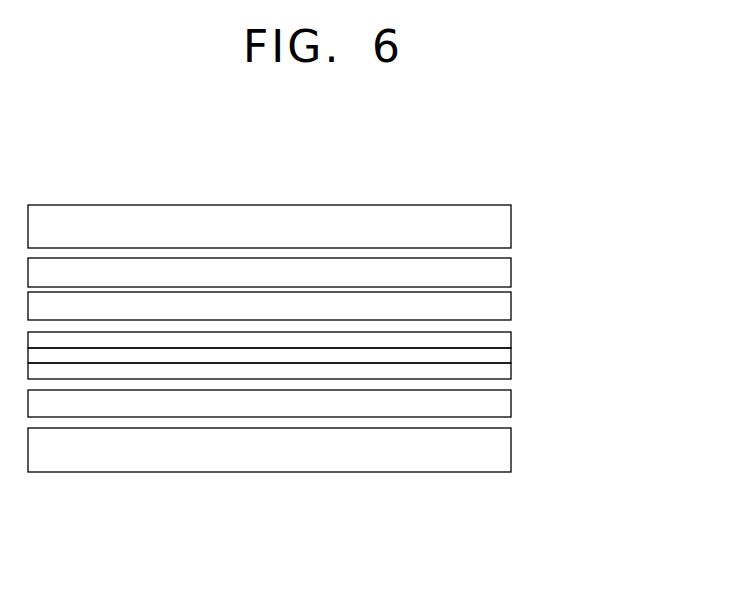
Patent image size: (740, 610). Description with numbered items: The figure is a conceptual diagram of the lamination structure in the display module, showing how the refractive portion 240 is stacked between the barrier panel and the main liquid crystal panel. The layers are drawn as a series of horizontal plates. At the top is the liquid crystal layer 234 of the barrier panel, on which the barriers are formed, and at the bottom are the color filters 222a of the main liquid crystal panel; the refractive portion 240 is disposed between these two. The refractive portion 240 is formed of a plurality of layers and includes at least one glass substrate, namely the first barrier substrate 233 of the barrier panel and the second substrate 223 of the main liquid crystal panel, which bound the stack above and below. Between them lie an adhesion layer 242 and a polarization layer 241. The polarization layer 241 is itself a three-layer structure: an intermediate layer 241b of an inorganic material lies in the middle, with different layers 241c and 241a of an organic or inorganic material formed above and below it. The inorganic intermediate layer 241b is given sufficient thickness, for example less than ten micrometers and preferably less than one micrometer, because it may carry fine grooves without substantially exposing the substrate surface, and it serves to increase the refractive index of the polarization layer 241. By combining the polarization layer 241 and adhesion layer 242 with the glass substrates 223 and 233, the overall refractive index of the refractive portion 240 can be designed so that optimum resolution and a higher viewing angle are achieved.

The liquid crystal layer 234 is at (511, 226).
The first barrier substrate 233 is at (511, 272).
The adhesion layer 242 is at (511, 305).
The polarization layer 241 is at (333, 353).
The layer of organic or inorganic material 241c is at (511, 336).
The intermediate layer 241b is at (511, 352).
The layer of organic or inorganic material 241a is at (511, 372).
The second substrate 223 is at (511, 403).
The color filters 222a is at (511, 448).
The refractive portion 240 is at (637, 263).